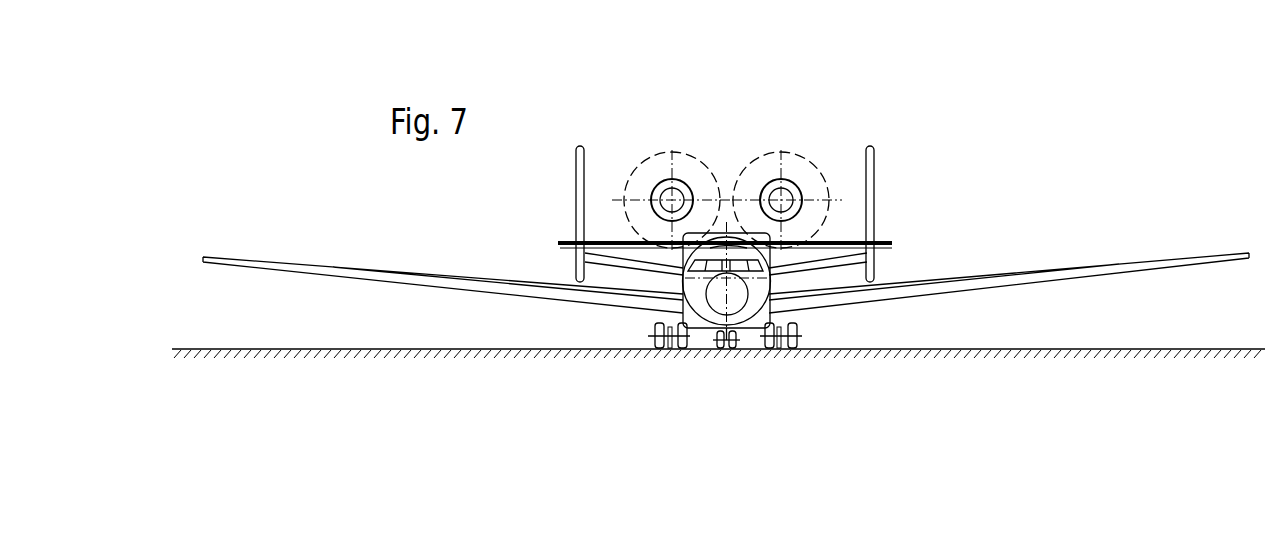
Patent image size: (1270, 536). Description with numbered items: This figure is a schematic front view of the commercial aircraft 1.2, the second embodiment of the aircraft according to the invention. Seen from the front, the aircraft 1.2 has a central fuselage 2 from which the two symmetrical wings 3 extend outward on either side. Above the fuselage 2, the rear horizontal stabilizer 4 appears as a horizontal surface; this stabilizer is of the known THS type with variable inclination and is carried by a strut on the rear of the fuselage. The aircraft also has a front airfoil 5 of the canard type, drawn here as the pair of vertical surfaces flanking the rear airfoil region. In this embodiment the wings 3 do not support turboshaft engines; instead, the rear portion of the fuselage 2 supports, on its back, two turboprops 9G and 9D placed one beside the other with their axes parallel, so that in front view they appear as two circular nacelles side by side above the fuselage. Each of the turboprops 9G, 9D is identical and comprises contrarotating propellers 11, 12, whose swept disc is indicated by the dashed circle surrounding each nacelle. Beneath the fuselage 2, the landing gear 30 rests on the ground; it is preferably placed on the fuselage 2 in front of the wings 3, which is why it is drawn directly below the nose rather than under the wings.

The commercial aircraft 1.2 is at (495, 242).
The fuselage 2 is at (710, 317).
The wings 3 is at (338, 267).
The rear horizontal stabilizer 4 is at (603, 242).
The front airfoil 5 is at (623, 242).
The turboprop 9D is at (681, 182).
The turboprop 9G is at (789, 182).
The contrarotating propeller 11 is at (726, 159).
The contrarotating propeller 12 is at (652, 155).
The landing gear 30 is at (815, 330).